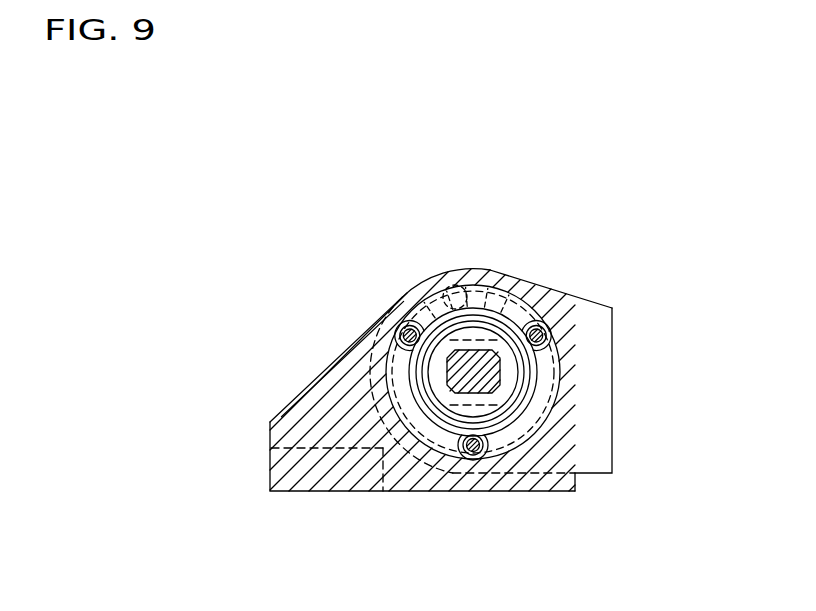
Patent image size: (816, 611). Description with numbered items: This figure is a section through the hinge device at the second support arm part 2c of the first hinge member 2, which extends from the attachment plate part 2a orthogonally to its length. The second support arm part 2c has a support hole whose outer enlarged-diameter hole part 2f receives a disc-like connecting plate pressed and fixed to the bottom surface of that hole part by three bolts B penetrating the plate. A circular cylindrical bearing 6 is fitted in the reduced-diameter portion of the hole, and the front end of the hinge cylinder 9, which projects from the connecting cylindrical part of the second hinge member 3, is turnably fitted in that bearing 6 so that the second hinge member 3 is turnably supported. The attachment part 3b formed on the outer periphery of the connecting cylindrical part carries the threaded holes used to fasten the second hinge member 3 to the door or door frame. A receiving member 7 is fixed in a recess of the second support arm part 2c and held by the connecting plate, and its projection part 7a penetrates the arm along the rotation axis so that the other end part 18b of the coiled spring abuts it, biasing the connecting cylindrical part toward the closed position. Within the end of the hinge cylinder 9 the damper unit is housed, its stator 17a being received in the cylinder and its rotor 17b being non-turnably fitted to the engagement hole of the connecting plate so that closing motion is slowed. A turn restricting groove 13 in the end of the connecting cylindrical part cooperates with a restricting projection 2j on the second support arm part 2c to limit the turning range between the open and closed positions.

The first hinge member 2 is at (342, 354).
The attachment plate part 2a is at (318, 481).
The second support arm part 2c is at (306, 406).
The enlarged-diameter hole part 2f is at (577, 378).
The restricting projection 2j is at (462, 473).
The second hinge member 3 is at (563, 293).
The attachment part 3b is at (613, 363).
The bearing 6 is at (506, 378).
The receiving member 7 is at (527, 292).
The projection part 7a is at (491, 300).
The hinge cylinder 9 is at (499, 388).
The turn restricting groove 13 is at (398, 440).
The stator 17a is at (507, 367).
The rotor 17b is at (486, 375).
The other end part of the coiled spring 18b is at (455, 285).
The bolts B is at (403, 329).